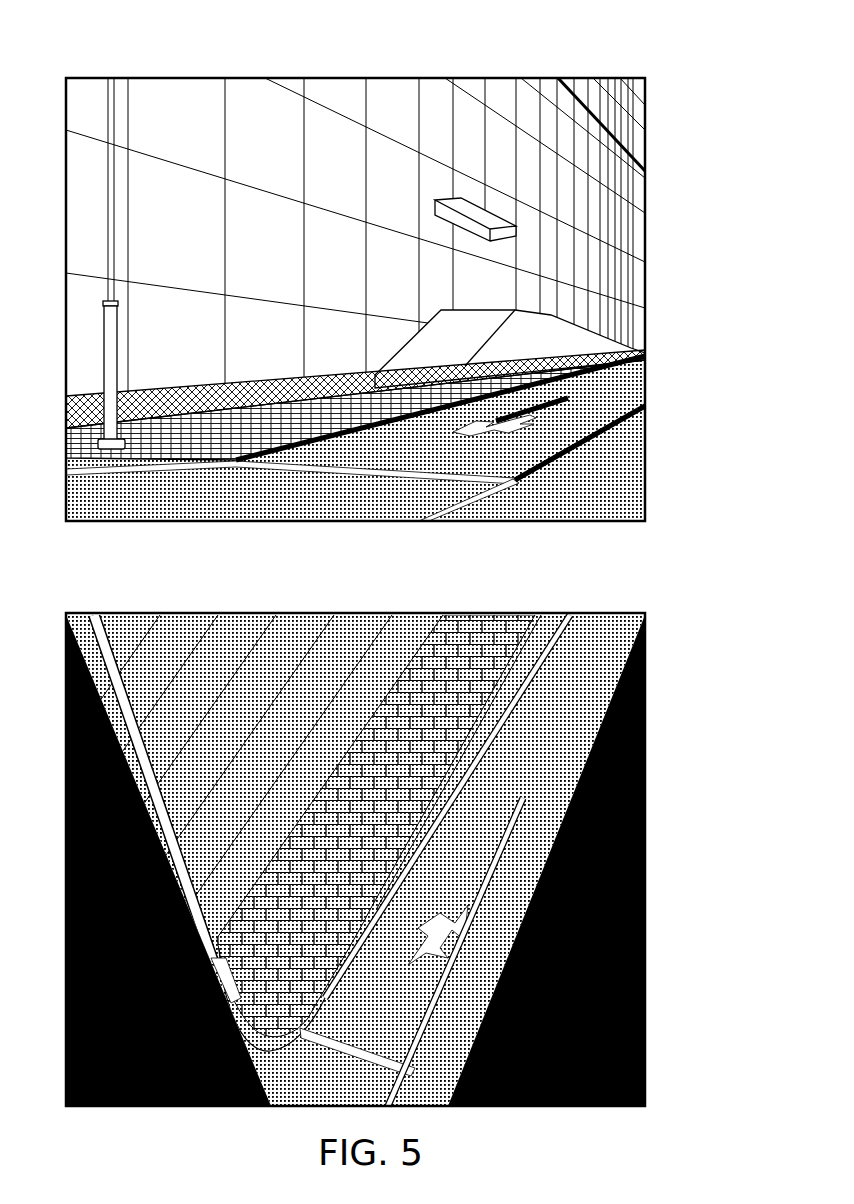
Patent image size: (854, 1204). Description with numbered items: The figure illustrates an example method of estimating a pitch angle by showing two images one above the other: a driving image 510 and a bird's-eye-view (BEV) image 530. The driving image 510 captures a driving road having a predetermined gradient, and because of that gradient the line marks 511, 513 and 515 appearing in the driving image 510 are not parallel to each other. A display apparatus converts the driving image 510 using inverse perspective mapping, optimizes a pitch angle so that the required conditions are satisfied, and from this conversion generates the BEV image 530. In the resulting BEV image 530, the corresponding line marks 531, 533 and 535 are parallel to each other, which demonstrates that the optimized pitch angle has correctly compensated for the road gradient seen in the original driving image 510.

The driving image 510 is at (394, 279).
The line mark 511 is at (637, 357).
The line mark 513 is at (637, 420).
The line mark 515 is at (637, 383).
The BEV image 530 is at (365, 837).
The line mark 531 is at (487, 713).
The line mark 533 is at (460, 987).
The line mark 535 is at (470, 853).